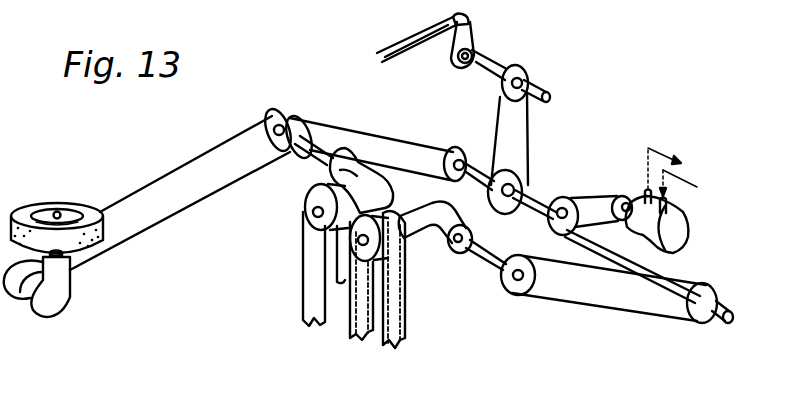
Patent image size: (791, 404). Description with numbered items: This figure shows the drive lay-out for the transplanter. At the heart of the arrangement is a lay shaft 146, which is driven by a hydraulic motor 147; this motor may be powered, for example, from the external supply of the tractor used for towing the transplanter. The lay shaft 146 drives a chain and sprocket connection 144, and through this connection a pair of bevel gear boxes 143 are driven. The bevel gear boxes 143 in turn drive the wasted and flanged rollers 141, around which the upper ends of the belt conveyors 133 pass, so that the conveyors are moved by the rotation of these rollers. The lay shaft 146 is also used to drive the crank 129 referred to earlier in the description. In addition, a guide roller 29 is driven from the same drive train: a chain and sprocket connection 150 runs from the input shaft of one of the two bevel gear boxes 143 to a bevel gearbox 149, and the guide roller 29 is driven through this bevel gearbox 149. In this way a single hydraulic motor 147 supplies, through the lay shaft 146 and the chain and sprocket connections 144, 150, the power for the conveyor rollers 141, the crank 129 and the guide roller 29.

The guide roller 29 is at (96, 208).
The crank 129 is at (412, 40).
The belt conveyors 133 is at (313, 297).
The wasted and flanged rollers 141 is at (357, 233).
The bevel gear boxes 143 is at (357, 168).
The chain and sprocket connection 144 is at (333, 125).
The lay shaft 146 is at (532, 202).
The hydraulic motor 147 is at (645, 233).
The bevel gearbox 149 is at (62, 292).
The chain and sprocket connection 150 is at (207, 193).